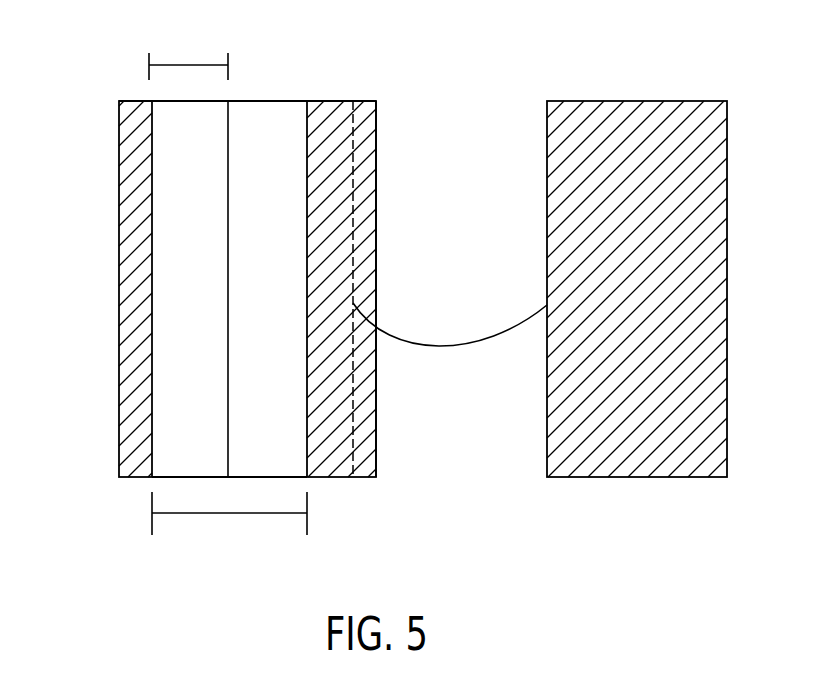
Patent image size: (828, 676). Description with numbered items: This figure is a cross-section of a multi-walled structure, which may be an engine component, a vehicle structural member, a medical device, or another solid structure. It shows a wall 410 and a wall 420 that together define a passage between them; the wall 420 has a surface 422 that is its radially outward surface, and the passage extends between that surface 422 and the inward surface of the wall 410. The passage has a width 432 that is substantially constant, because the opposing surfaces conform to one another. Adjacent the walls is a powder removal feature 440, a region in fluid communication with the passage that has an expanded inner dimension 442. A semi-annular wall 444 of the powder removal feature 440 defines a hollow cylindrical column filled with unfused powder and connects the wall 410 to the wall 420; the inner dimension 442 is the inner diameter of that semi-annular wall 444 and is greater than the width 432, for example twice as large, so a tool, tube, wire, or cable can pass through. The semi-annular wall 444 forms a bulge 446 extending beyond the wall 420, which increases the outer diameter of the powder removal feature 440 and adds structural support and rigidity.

The wall 410 is at (104, 238).
The wall 420 is at (290, 88).
The surface 422 is at (228, 100).
The width 432 is at (148, 63).
The powder removal feature 440 is at (241, 374).
The inner dimension 442 is at (150, 511).
The semi-annular wall 444 is at (330, 463).
The bulge 446 is at (365, 462).